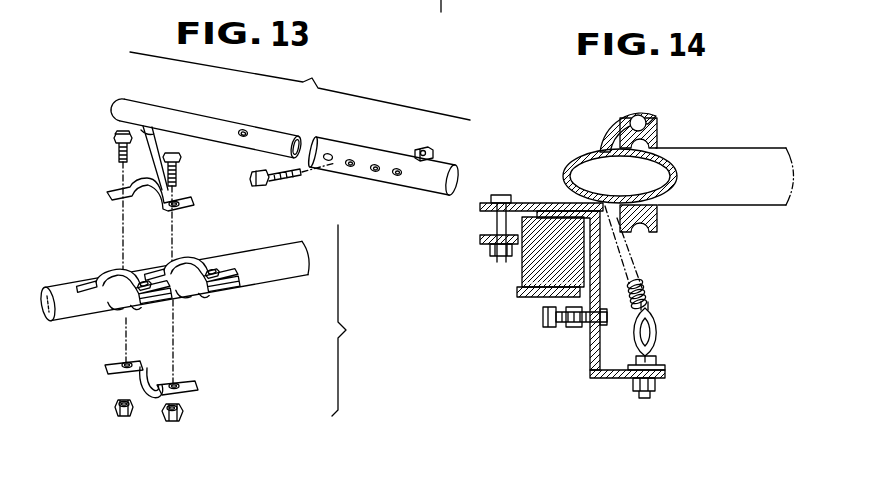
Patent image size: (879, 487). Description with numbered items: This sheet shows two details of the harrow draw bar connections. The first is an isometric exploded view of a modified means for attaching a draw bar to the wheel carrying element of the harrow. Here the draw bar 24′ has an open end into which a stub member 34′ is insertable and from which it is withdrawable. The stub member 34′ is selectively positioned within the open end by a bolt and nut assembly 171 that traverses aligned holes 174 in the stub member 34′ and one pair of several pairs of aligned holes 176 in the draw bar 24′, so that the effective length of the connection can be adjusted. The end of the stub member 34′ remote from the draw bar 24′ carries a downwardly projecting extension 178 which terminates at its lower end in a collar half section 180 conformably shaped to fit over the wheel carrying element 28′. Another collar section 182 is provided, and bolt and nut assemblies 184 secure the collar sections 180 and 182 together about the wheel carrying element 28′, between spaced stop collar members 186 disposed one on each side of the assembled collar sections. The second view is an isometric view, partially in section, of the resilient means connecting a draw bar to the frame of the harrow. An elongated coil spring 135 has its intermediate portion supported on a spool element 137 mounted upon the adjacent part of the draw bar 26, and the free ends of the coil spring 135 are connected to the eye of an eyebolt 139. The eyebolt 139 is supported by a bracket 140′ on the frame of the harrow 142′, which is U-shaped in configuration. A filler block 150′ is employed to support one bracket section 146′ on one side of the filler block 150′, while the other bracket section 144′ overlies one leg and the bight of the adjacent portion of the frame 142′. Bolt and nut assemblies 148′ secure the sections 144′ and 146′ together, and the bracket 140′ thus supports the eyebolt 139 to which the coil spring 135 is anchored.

In FIG. 13, the stub member 34′ is at (213, 125).
In FIG. 13, the aligned holes 174 is at (240, 138).
In FIG. 13, the downwardly projecting extension 178 is at (147, 170).
In FIG. 13, the collar half section 180 is at (128, 208).
In FIG. 13, the bolt and nut assemblies 184 is at (186, 178).
In FIG. 13, the draw bar 24′ is at (342, 152).
In FIG. 13, the bolt and nut assembly 171 is at (281, 184).
In FIG. 13, the aligned holes 176 is at (377, 174).
In FIG. 13, the wheel carrying element 28′ is at (243, 258).
In FIG. 13, the stop collar members 186 is at (118, 318).
In FIG. 13, the collar section 182 is at (153, 398).
In FIG. 14, the draw bar 26 is at (750, 143).
In FIG. 14, the spool element 137 is at (657, 138).
In FIG. 14, the coil spring 135 is at (648, 294).
In FIG. 14, the eyebolt 139 is at (658, 342).
In FIG. 14, the bracket 140′ is at (635, 373).
In FIG. 14, the frame of the harrow 142′ is at (552, 214).
In FIG. 14, the bracket section 144′ is at (518, 204).
In FIG. 14, the bolt and nut assemblies 148′ is at (498, 222).
In FIG. 14, the filler block 150′ is at (532, 255).
In FIG. 14, the bracket section 146′ is at (518, 291).